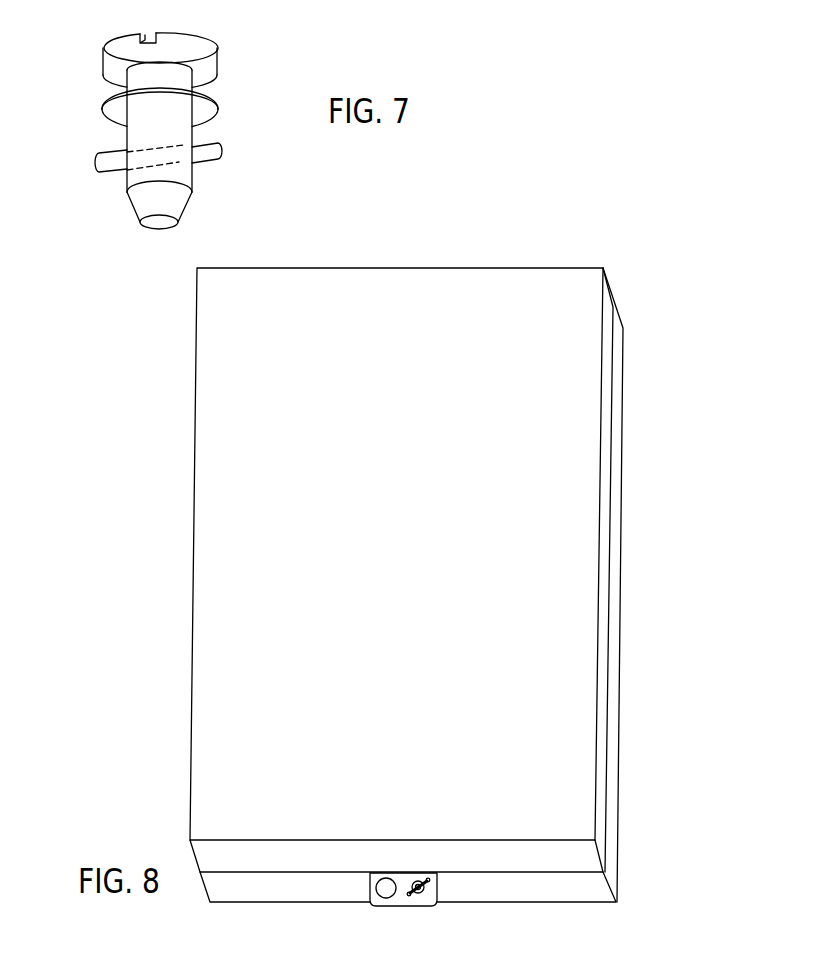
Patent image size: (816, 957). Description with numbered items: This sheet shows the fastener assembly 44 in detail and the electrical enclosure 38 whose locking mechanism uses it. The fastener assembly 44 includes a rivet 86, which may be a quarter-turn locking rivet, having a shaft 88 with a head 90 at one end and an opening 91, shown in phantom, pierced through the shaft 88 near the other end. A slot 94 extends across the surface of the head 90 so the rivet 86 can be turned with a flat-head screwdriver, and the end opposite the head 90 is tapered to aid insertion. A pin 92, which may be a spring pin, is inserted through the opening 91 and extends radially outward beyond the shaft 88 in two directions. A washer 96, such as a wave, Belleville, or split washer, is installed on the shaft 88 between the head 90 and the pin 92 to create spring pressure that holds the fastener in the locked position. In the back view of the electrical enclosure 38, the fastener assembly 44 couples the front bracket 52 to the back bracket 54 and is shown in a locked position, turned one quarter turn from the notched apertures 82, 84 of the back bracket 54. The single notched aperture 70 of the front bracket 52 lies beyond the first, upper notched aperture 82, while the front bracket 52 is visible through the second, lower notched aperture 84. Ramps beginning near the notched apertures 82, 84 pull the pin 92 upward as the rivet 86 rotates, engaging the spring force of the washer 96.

In FIG. 7, the fastener assembly 44 is at (272, 68).
In FIG. 8, the fastener assembly 44 is at (410, 892).
In FIG. 7, the rivet 86 is at (219, 33).
In FIG. 7, the head 90 is at (172, 42).
In FIG. 7, the slot 94 is at (150, 37).
In FIG. 7, the washer 96 is at (110, 103).
In FIG. 7, the shaft 88 is at (129, 177).
In FIG. 7, the pin 92 is at (220, 148).
In FIG. 7, the opening 91 is at (185, 167).
In FIG. 8, the electrical enclosure 38 is at (619, 260).
In FIG. 8, the front bracket 52 is at (439, 898).
In FIG. 8, the back bracket 54 is at (400, 898).
In FIG. 8, the notched aperture 70 is at (415, 881).
In FIG. 8, the first notched aperture 82 is at (424, 881).
In FIG. 8, the second notched aperture 84 is at (432, 887).